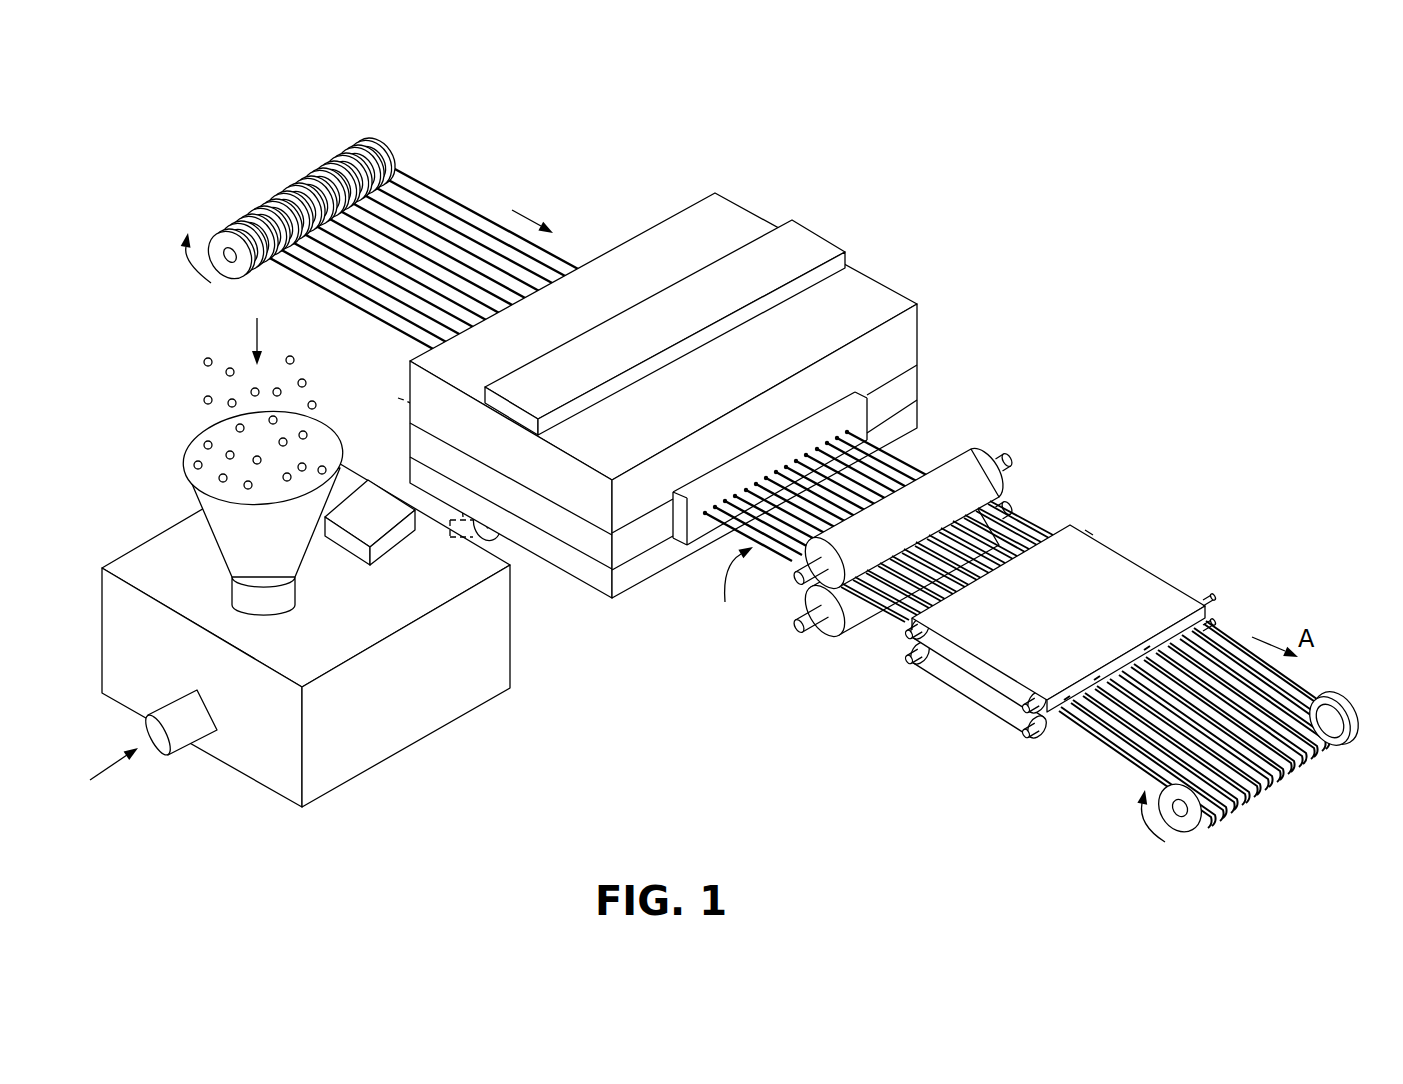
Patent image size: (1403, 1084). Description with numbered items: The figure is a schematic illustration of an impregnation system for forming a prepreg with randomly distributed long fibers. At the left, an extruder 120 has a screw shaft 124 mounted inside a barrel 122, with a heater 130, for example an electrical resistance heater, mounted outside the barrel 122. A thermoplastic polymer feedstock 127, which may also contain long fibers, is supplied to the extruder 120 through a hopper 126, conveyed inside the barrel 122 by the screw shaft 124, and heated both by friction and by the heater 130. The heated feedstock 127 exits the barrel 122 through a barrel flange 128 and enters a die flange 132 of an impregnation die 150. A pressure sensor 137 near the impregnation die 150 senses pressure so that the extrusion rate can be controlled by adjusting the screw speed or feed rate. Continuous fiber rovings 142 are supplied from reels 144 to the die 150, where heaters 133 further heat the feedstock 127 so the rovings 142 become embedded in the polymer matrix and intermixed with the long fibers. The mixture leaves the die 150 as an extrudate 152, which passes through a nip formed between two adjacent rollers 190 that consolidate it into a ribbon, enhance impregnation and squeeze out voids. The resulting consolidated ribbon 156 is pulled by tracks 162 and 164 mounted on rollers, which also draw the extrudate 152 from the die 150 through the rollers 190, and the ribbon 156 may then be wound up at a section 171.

The extruder 120 is at (334, 575).
The barrel 122 is at (360, 748).
The screw shaft 124 is at (197, 726).
The hopper 126 is at (208, 502).
The thermoplastic polymer feedstock 127 is at (205, 400).
The barrel flange 128 is at (480, 538).
The heater 130 is at (392, 535).
The die flange 132 is at (527, 510).
The heaters 133 is at (802, 243).
The pressure sensor 137 is at (398, 398).
The continuous fiber rovings 142 is at (420, 200).
The reels 144 is at (218, 236).
The impregnation die 150 is at (671, 401).
The extrudate 152 is at (817, 531).
The consolidated ribbon 156 is at (890, 613).
The track 162 is at (1113, 567).
The track 164 is at (978, 703).
The wind-up section 171 is at (1187, 827).
The rollers 190 is at (975, 467).